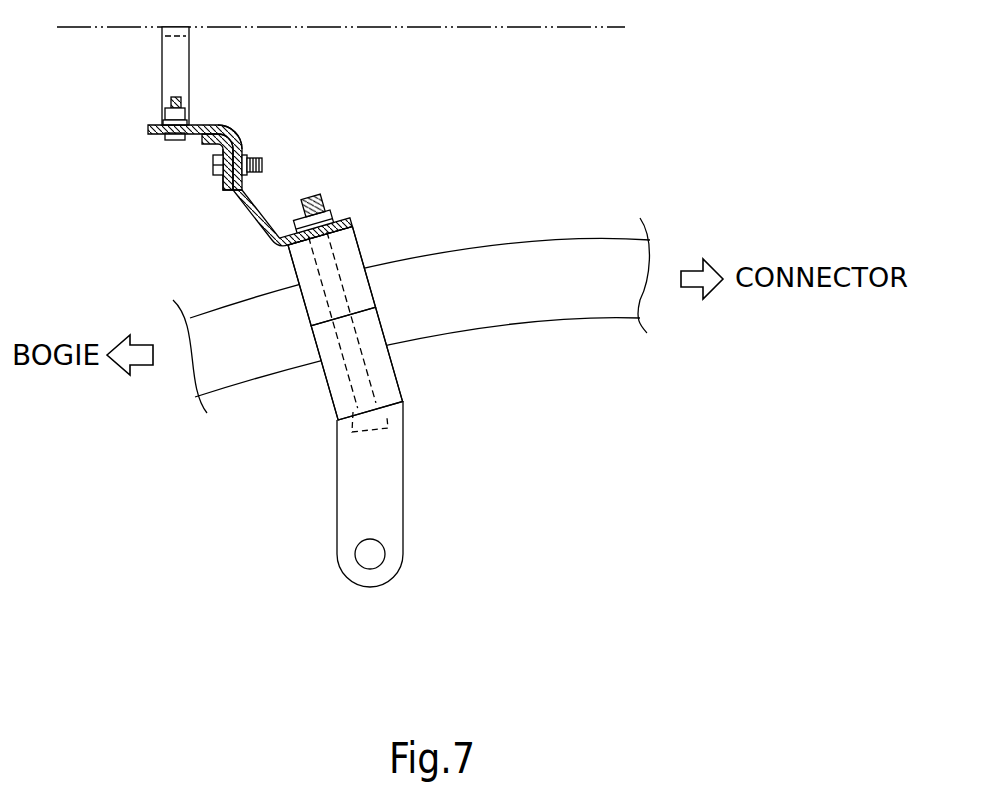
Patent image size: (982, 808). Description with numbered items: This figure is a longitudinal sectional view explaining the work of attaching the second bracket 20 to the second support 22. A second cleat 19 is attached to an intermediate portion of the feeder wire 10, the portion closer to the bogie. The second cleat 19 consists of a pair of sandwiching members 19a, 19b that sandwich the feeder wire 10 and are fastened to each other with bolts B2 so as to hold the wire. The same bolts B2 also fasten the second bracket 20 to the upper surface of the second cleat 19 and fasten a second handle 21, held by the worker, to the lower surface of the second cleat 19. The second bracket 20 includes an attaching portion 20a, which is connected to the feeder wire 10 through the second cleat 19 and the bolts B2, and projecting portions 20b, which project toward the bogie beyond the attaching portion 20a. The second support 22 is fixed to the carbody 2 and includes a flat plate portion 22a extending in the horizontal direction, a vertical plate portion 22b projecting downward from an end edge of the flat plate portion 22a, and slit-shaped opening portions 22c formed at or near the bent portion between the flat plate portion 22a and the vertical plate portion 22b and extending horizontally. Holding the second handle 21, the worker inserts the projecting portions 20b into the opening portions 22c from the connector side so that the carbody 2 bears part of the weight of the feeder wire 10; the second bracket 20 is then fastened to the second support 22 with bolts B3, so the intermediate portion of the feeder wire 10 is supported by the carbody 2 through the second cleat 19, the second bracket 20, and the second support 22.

The carbody 2 is at (597, 27).
The feeder wire 10 is at (610, 307).
The second cleat 19 is at (386, 325).
The sandwiching member 19a is at (357, 243).
The sandwiching member 19b is at (393, 374).
The second bracket 20 is at (281, 215).
The attaching portion 20a is at (345, 220).
The projecting portion 20b is at (208, 142).
The second handle 21 is at (359, 588).
The second support 22 is at (155, 146).
The flat plate portion 22a is at (153, 132).
The vertical plate portion 22b is at (222, 185).
The opening portion 22c is at (221, 126).
The bolt B2 is at (313, 192).
The bolt B3 is at (263, 163).